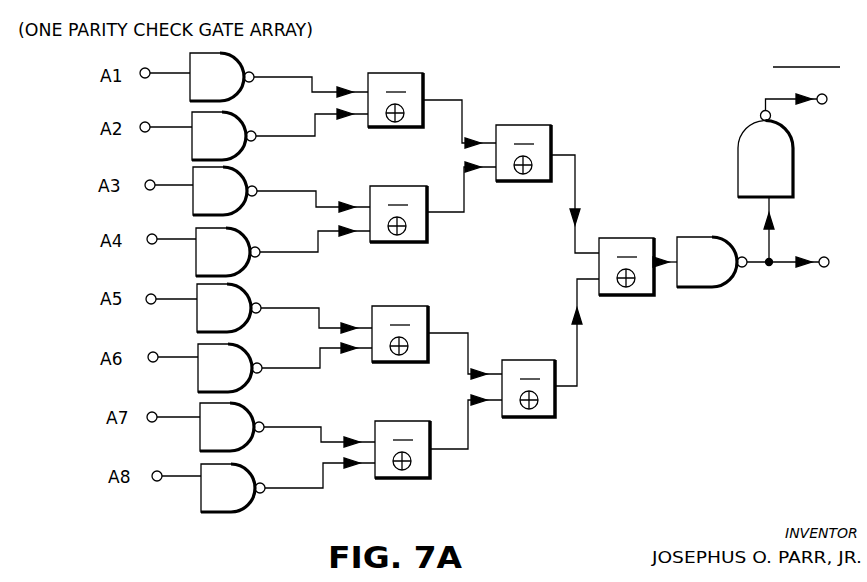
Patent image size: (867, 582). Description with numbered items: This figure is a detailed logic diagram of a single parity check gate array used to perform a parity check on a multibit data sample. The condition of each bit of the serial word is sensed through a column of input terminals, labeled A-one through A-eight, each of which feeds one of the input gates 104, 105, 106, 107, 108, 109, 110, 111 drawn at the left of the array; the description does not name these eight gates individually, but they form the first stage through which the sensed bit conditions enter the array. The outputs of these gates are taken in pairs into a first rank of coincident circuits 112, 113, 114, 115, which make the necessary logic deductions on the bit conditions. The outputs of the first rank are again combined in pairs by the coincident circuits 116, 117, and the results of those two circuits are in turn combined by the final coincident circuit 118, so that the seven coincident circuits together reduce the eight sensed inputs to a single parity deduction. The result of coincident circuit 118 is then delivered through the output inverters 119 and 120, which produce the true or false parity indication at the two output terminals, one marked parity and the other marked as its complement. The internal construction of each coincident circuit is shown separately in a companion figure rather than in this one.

The NAND gate 104 is at (230, 66).
The NAND gate 105 is at (232, 125).
The NAND gate 106 is at (230, 185).
The NAND gate 107 is at (230, 243).
The NAND gate 108 is at (232, 300).
The NAND gate 109 is at (235, 360).
The NAND gate 110 is at (237, 417).
The NAND gate 111 is at (238, 477).
The coincident circuit 112 is at (404, 82).
The coincident circuit 113 is at (405, 195).
The coincident circuit 114 is at (405, 310).
The coincident circuit 115 is at (408, 427).
The coincident circuit 116 is at (533, 133).
The coincident circuit 117 is at (520, 367).
The coincident circuit 118 is at (612, 245).
The output inverter 119 is at (694, 245).
The output inverter 120 is at (780, 150).